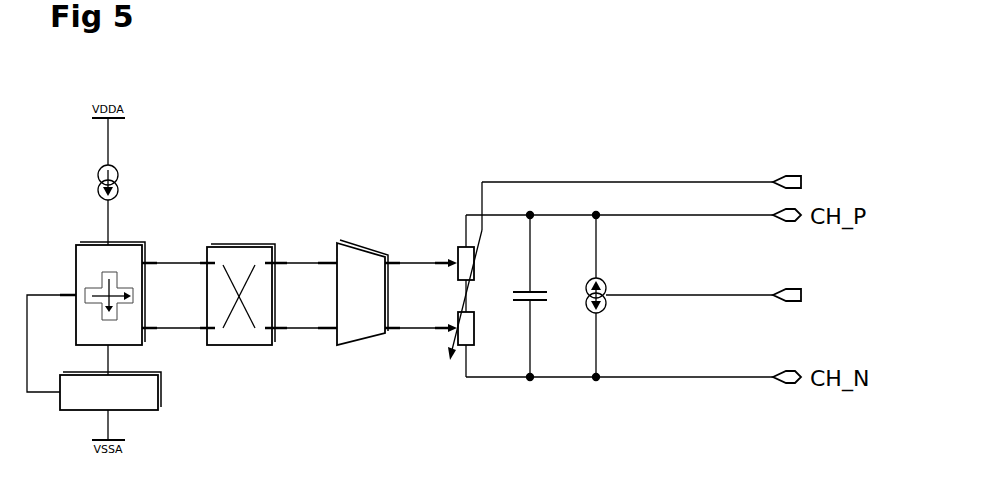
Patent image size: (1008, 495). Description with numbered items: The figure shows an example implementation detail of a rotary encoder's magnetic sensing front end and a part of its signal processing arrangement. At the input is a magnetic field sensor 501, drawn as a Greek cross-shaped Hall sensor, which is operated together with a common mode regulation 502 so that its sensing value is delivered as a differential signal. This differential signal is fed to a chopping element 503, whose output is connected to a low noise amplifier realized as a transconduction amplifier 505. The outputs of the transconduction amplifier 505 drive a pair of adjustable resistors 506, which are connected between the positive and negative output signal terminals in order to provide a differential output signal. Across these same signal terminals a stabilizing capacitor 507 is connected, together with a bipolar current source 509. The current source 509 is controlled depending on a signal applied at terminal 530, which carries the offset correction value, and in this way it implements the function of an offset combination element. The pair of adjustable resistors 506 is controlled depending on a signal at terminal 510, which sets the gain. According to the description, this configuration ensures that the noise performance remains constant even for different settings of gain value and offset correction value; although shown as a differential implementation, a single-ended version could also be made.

The magnetic field sensor 501 is at (119, 282).
The common mode regulation 502 is at (133, 400).
The chopping element 503 is at (247, 282).
The transconduction amplifier 505 is at (359, 283).
The pair of adjustable resistors 506 is at (447, 279).
The stabilizing capacitor 507 is at (546, 296).
The bipolar current source 509 is at (620, 296).
The terminal 510 is at (812, 183).
The terminal 530 is at (812, 296).